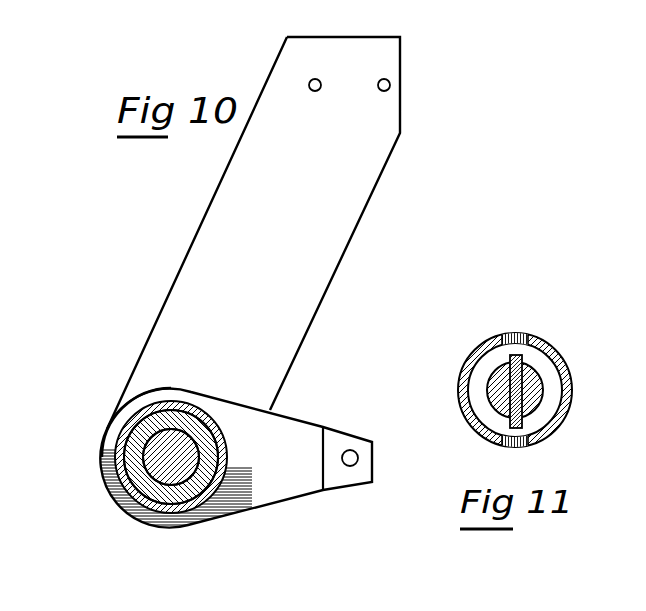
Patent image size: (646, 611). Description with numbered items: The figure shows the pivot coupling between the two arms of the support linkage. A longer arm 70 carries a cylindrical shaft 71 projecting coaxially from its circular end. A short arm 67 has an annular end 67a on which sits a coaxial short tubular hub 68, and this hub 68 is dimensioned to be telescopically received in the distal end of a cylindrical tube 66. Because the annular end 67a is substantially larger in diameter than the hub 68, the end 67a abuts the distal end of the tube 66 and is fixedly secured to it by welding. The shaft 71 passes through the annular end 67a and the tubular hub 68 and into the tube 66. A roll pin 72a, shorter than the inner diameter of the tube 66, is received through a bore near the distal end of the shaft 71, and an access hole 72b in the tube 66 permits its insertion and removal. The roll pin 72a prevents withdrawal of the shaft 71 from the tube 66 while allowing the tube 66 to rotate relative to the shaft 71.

In FIG. 10, the longer arm 70 is at (188, 264).
In FIG. 10, the short arm 67 is at (270, 495).
In FIG. 10, the annular end 67a is at (116, 424).
In FIG. 10, the cylindrical tube 66 is at (122, 478).
In FIG. 11, the cylindrical tube 66 is at (477, 425).
In FIG. 10, the tubular hub 68 is at (143, 488).
In FIG. 10, the cylindrical shaft 71 is at (153, 454).
In FIG. 11, the cylindrical shaft 71 is at (541, 389).
In FIG. 11, the roll pin 72a is at (522, 357).
In FIG. 11, the access hole 72b is at (523, 333).